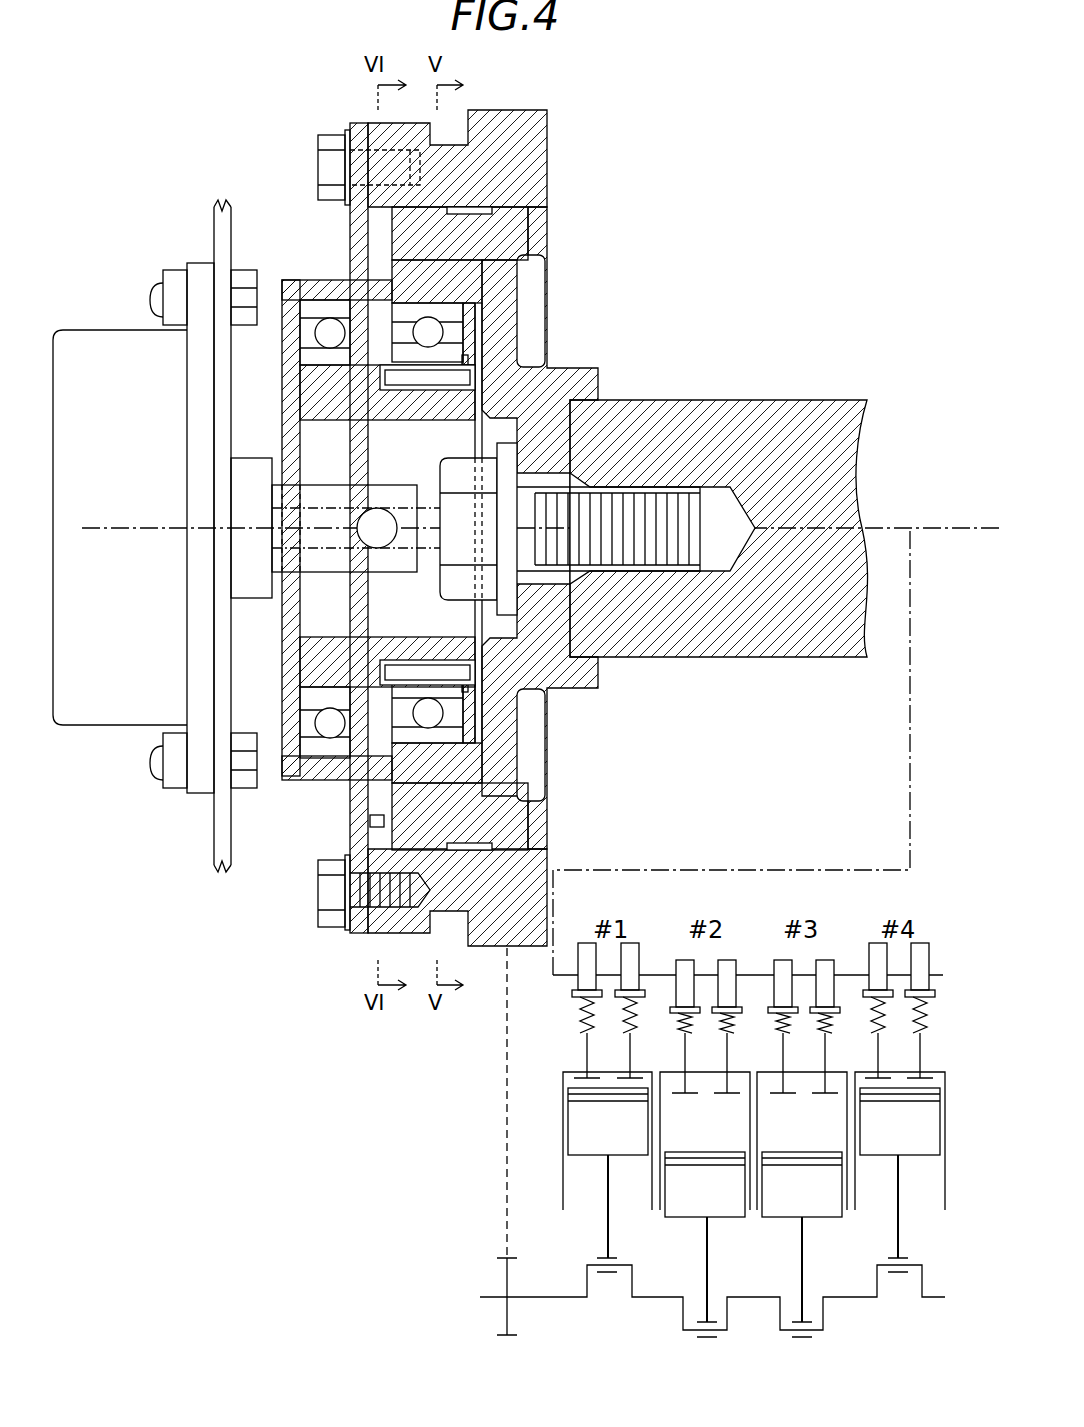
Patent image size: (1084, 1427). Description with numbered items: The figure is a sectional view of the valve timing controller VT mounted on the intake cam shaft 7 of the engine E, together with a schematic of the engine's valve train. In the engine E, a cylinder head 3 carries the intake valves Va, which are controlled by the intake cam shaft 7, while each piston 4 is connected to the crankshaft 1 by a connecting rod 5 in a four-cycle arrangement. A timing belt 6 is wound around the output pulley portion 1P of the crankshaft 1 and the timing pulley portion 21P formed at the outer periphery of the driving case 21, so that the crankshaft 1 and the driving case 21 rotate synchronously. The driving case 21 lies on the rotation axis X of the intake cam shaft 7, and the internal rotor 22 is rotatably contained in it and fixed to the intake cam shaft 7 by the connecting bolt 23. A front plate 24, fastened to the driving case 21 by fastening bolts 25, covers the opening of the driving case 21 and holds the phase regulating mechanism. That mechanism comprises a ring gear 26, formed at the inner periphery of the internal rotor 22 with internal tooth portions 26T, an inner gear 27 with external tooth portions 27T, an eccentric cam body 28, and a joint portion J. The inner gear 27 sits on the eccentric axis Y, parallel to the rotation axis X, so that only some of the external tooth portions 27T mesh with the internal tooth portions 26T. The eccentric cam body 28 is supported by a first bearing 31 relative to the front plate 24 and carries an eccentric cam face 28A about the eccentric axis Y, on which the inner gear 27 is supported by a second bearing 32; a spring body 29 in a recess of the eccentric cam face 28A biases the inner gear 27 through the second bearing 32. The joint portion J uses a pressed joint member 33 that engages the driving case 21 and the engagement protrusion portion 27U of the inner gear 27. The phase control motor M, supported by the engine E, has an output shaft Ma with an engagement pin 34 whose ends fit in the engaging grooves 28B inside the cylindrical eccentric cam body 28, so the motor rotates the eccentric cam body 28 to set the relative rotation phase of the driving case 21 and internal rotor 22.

The valve timing controller VT is at (283, 120).
The phase control motor M is at (105, 330).
The engine E is at (812, 165).
The rotation axis X is at (533, 530).
The eccentric axis Y is at (262, 522).
The front plate 24 is at (360, 123).
The fastening bolt 25 is at (318, 167).
The driving case 21 is at (547, 150).
The timing pulley portion 21P is at (510, 110).
The internal rotor 22 is at (500, 192).
The ring gear 26 is at (440, 262).
The internal tooth portion 26T is at (470, 810).
The inner gear 27 is at (470, 292).
The engagement protrusion portion 27U is at (345, 285).
The external tooth portion 27T is at (480, 790).
The eccentric cam body 28 is at (300, 400).
The eccentric cam face 28A is at (430, 662).
The engaging groove 28B is at (342, 540).
The spring body 29 is at (425, 392).
The first bearing 31 is at (322, 340).
The second bearing 32 is at (455, 332).
The joint member 33 is at (350, 740).
The engagement pin 34 is at (372, 500).
The output shaft Ma is at (370, 485).
The joint portion J is at (370, 822).
The connecting bolt 23 is at (690, 548).
The intake cam shaft 7 is at (785, 400).
The timing belt 6 is at (507, 1100).
The crankshaft 1 is at (540, 1296).
The output pulley portion 1P is at (497, 1272).
The cylinder head 3 is at (670, 1070).
The piston 4 is at (570, 1130).
The connecting rod 5 is at (606, 1240).
The intake valve Va is at (622, 1072).